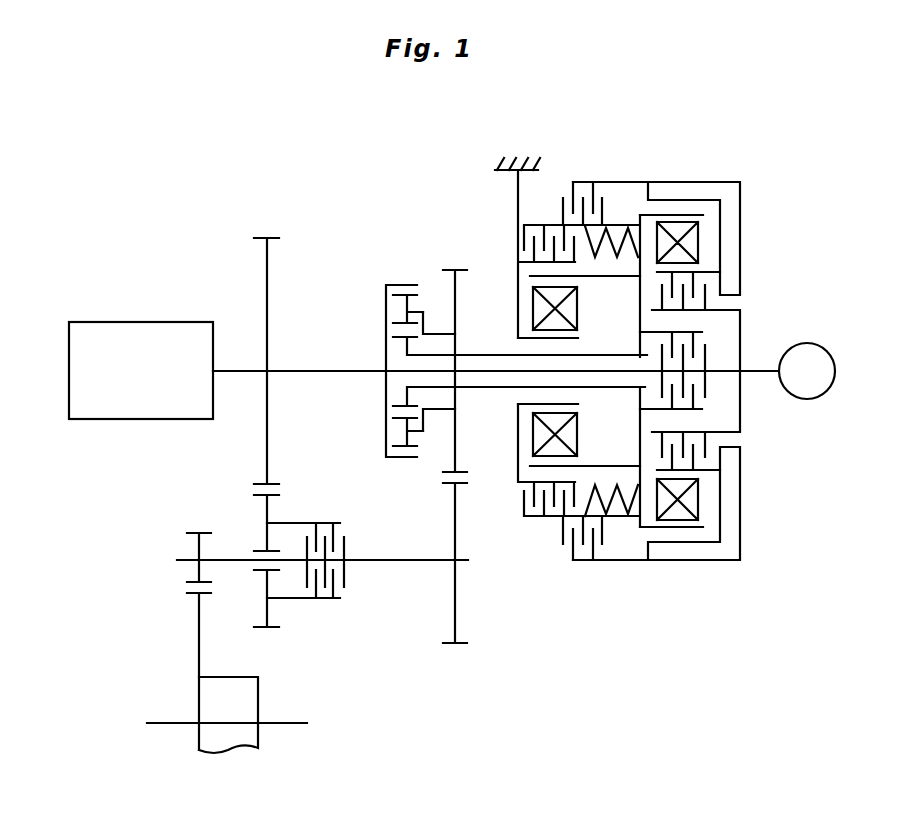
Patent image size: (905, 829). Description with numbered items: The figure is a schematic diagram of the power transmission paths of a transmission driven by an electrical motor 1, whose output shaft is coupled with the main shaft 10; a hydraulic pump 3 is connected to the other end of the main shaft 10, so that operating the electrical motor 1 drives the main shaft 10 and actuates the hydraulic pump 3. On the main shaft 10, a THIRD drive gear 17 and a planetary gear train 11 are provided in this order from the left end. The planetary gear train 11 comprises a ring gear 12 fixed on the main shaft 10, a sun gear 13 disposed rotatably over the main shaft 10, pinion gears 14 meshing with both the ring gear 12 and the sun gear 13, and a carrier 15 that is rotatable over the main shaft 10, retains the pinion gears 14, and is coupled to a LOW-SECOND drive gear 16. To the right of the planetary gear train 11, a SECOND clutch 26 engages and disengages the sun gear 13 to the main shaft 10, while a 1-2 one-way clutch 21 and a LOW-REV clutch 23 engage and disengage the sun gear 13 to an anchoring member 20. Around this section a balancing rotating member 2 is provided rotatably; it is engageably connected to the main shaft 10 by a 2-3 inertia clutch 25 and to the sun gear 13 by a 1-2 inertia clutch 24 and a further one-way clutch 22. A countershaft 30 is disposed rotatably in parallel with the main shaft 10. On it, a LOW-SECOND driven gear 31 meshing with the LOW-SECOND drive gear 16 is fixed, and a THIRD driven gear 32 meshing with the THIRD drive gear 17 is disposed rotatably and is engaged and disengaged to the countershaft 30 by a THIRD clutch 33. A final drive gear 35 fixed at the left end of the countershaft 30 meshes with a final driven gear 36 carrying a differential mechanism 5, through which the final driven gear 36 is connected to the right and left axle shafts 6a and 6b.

The electrical motor 1 is at (143, 322).
The balancing rotating member 2 is at (711, 182).
The hydraulic pump 3 is at (835, 371).
The differential mechanism 5 is at (262, 695).
The right axle shaft 6a is at (295, 727).
The left axle shaft 6b is at (165, 727).
The main shaft 10 is at (328, 371).
The planetary gear train 11 is at (395, 230).
The ring gear 12 is at (386, 461).
The sun gear 13 is at (386, 346).
The pinion gears 14 is at (412, 285).
The carrier 15 is at (425, 311).
The LOW-SECOND drive gear 16 is at (455, 268).
The THIRD drive gear 17 is at (275, 235).
The anchoring member 20 is at (517, 190).
The 1-2 one-way clutch 21 is at (577, 303).
The clutch 22 is at (698, 243).
The LOW-REV clutch 23 is at (540, 224).
The 1-2 inertia clutch 24 is at (595, 181).
The 2-3 inertia clutch 25 is at (695, 300).
The SECOND clutch 26 is at (695, 360).
The countershaft 30 is at (400, 568).
The LOW-SECOND driven gear 31 is at (457, 649).
The THIRD driven gear 32 is at (263, 630).
The THIRD clutch 33 is at (330, 545).
The final drive gear 35 is at (199, 531).
The final driven gear 36 is at (192, 595).